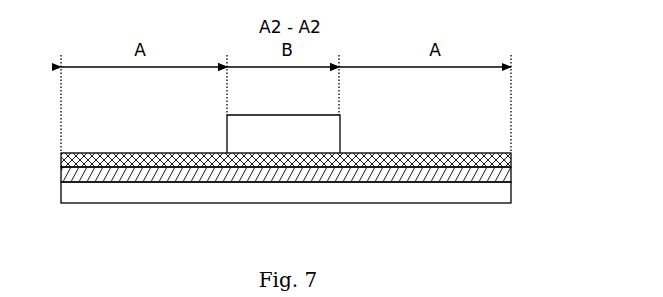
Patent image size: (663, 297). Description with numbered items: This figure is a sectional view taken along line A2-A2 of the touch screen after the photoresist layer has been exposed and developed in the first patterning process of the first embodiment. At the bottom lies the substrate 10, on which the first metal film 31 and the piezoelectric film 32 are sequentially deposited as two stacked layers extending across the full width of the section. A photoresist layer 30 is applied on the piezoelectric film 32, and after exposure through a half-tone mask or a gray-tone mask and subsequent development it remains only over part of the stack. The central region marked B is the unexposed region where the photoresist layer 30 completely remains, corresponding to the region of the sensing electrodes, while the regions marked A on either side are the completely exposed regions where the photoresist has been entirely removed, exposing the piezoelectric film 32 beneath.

The substrate 10 is at (140, 192).
The photoresist layer 30 is at (337, 128).
The first metal film 31 is at (282, 173).
The piezoelectric film 32 is at (407, 160).